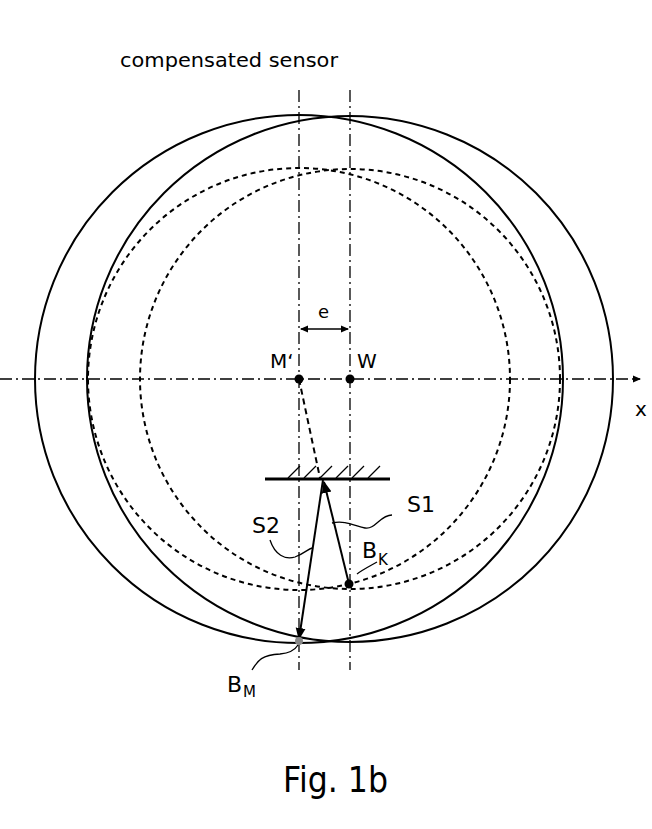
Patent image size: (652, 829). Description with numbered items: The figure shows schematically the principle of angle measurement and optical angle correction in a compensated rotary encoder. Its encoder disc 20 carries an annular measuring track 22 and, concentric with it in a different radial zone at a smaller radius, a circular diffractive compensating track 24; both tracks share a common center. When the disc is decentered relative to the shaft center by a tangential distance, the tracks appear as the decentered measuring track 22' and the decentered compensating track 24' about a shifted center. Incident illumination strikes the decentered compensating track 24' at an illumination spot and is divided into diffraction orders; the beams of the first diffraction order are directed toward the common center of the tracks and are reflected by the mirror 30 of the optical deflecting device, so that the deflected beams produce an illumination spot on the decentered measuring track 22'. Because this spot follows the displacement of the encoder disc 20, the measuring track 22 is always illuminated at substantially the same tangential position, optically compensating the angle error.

The encoder disc 20 is at (119, 156).
The measuring track 22 is at (350, 379).
The decentered measuring track 22' is at (325, 379).
The compensating track 24 is at (350, 379).
The decentered compensating track 24' is at (299, 379).
The mirror 30 is at (387, 476).